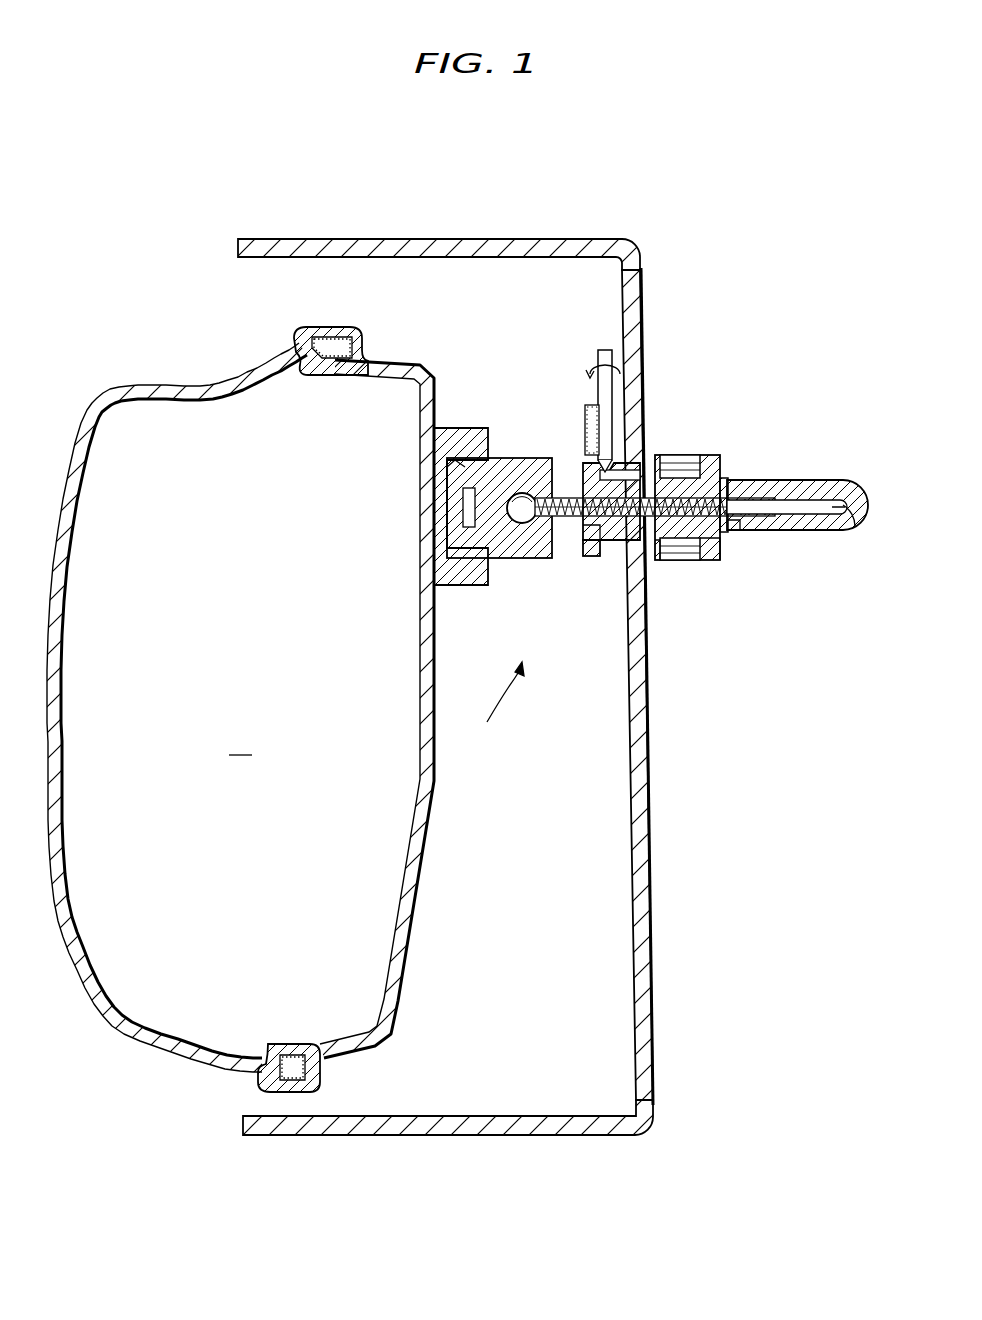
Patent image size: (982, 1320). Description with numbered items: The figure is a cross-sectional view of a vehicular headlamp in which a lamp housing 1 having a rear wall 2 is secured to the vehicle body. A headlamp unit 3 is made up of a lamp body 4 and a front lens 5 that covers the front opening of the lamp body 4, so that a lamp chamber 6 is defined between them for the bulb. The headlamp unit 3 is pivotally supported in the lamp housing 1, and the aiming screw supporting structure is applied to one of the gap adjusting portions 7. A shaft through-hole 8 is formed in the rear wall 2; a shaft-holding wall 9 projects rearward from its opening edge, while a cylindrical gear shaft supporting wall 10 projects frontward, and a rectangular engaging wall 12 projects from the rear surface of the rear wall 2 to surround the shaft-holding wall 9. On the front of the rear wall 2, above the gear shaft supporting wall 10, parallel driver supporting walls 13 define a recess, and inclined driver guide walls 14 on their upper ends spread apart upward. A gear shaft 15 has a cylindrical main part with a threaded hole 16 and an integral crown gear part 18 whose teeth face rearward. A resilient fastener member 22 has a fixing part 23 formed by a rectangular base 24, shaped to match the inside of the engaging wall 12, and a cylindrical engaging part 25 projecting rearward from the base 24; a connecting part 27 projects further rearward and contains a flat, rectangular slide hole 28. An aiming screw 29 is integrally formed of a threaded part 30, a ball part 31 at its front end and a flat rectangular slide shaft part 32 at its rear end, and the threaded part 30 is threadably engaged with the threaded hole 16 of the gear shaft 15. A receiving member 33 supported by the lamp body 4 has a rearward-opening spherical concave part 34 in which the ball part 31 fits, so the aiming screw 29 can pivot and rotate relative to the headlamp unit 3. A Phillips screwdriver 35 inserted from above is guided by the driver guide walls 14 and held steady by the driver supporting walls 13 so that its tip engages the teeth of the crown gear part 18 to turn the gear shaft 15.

The lamp housing 1 is at (433, 238).
The rear wall 2 is at (655, 1078).
The headlamp unit 3 is at (207, 719).
The lamp body 4 is at (402, 1015).
The front lens 5 is at (122, 1025).
The lamp chamber 6 is at (240, 740).
The gap adjusting portion 7 is at (501, 706).
The shaft through-hole 8 is at (643, 445).
The shaft-holding wall 9 is at (706, 552).
The gear shaft supporting wall 10 is at (614, 548).
The engaging wall 12 is at (700, 450).
The driver supporting walls 13 is at (585, 462).
The driver guide walls 14 is at (600, 468).
The gear shaft 15 is at (588, 545).
The threaded hole 16 is at (590, 556).
The crown gear part 18 is at (588, 497).
The fastener member 22 is at (848, 482).
The fixing part 23 is at (735, 530).
The base 24 is at (690, 560).
The engaging part 25 is at (728, 480).
The connecting part 27 is at (862, 530).
The slide hole 28 is at (835, 512).
The aiming screw 29 is at (652, 548).
The threaded part 30 is at (667, 455).
The ball part 31 is at (522, 508).
The slide shaft part 32 is at (795, 505).
The receiving member 33 is at (507, 455).
The spherical concave part 34 is at (502, 558).
The Phillips screwdriver 35 is at (604, 352).